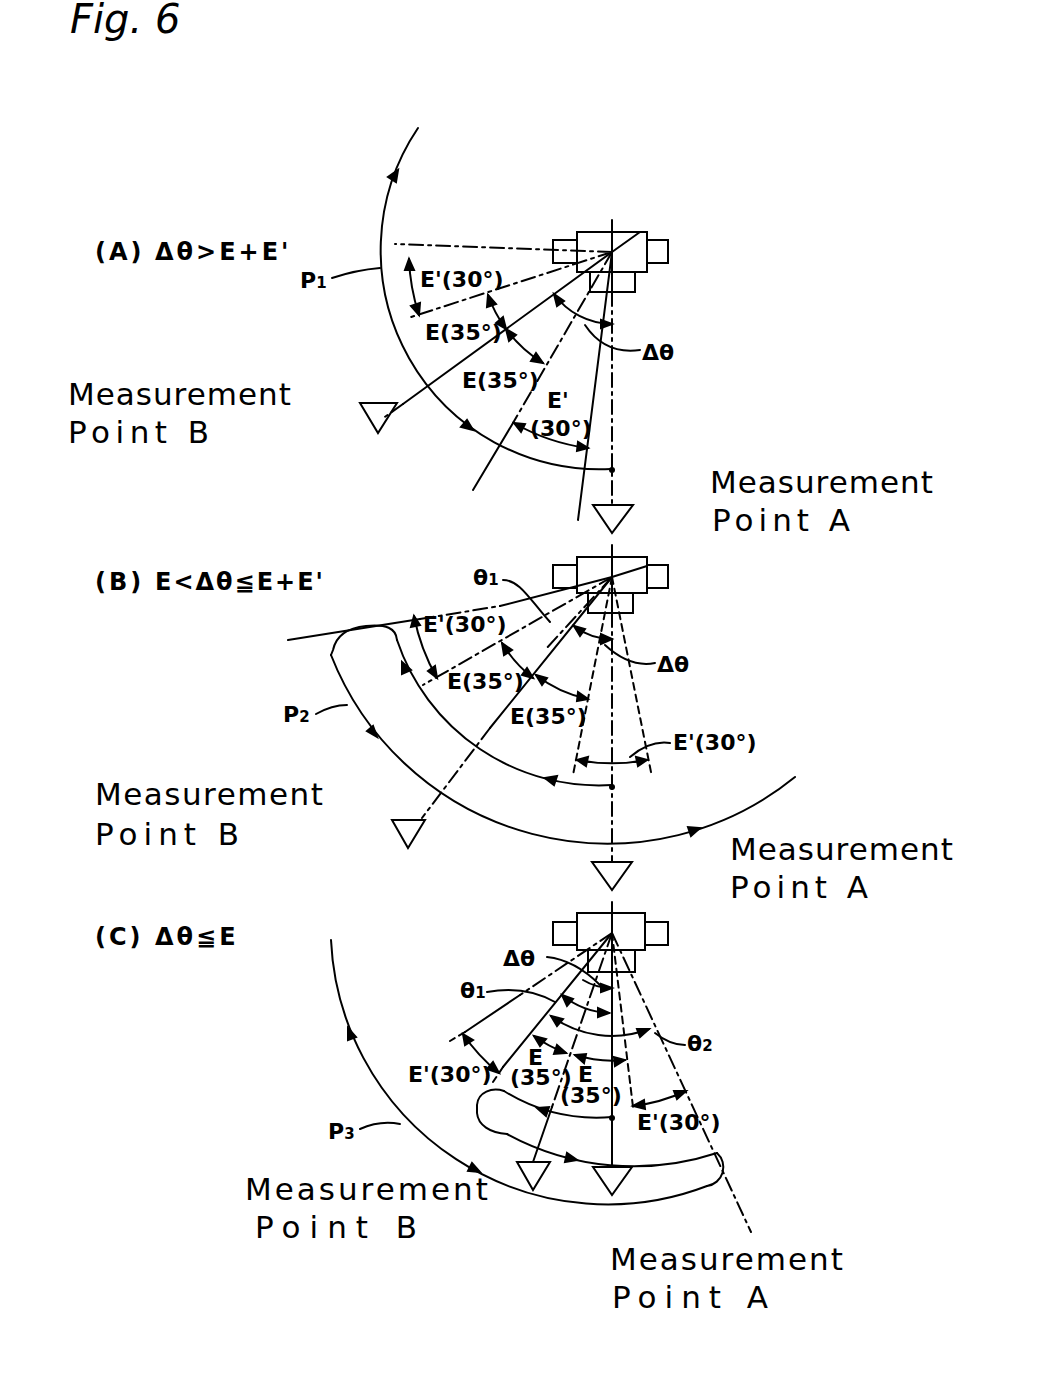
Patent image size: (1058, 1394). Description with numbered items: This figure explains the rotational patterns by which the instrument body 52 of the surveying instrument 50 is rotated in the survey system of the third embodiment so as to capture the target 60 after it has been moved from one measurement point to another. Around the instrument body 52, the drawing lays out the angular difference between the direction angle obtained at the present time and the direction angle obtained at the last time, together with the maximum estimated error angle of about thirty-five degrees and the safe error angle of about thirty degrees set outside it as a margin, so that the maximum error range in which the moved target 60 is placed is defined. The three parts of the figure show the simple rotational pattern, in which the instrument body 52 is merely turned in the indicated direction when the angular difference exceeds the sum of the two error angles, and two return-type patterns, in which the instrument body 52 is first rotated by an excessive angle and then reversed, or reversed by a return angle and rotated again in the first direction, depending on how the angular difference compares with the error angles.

The surveying instrument 50 is at (661, 599).
The instrument body 52 is at (650, 270).
The target 60 is at (360, 418).